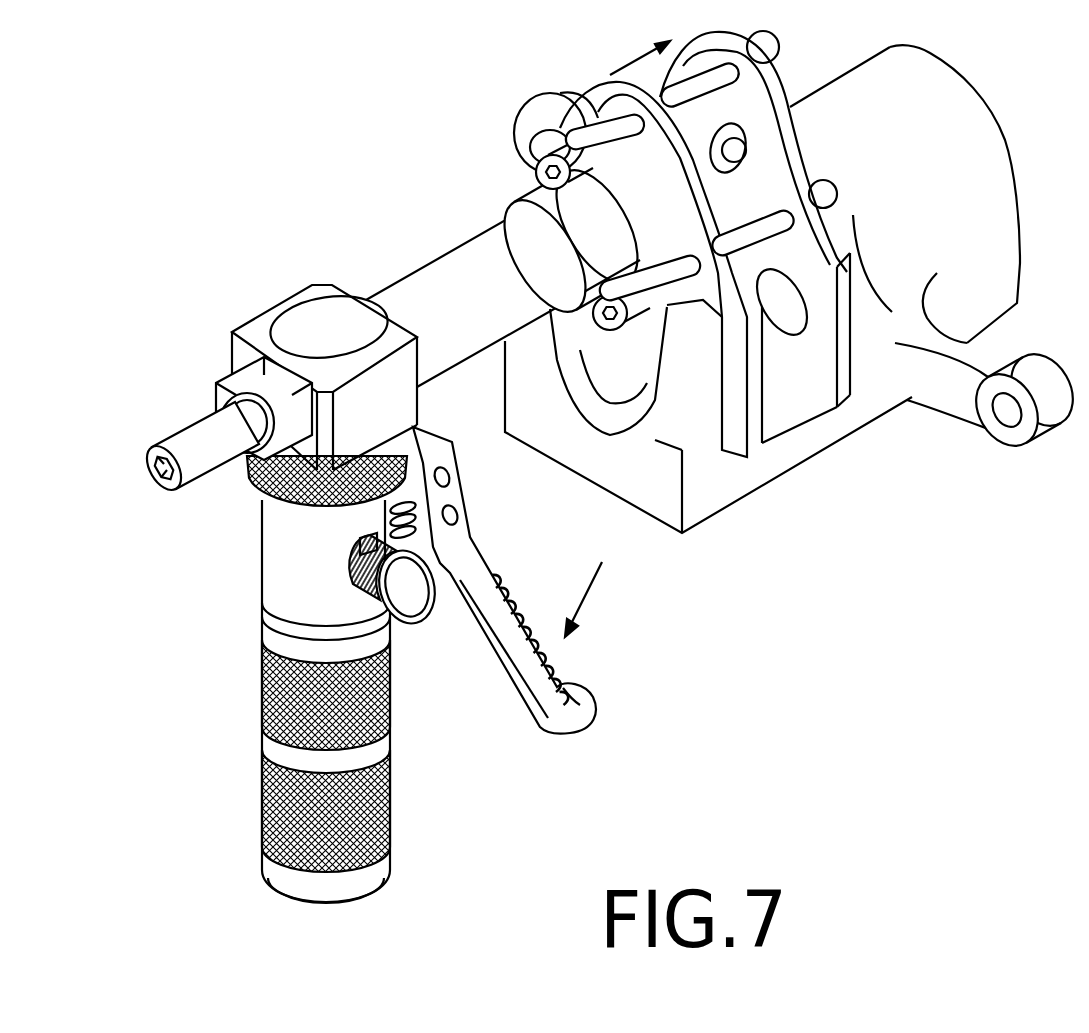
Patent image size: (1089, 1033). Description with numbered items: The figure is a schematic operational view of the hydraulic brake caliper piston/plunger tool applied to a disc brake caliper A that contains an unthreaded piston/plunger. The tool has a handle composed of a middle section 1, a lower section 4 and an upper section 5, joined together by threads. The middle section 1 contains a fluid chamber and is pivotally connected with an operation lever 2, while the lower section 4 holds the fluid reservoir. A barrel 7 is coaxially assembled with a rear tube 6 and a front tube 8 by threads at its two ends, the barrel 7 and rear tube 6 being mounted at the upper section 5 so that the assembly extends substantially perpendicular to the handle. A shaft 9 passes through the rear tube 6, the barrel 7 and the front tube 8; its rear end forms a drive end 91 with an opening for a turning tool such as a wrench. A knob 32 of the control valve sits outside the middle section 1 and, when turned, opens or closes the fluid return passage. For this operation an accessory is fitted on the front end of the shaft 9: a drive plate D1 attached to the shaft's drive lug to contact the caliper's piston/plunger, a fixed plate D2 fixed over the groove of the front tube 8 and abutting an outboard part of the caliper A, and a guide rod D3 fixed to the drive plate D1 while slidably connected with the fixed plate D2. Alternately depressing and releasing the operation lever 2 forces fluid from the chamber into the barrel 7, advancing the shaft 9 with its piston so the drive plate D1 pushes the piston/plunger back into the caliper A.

The middle section 1 is at (272, 557).
The operation lever 2 is at (553, 668).
The lower section 4 is at (260, 797).
The upper section 5 is at (252, 325).
The rear tube 6 is at (255, 368).
The barrel 7 is at (430, 273).
The front tube 8 is at (553, 217).
The shaft 9 is at (185, 419).
The drive end 91 is at (144, 427).
The knob 32 is at (412, 600).
The disc brake caliper A is at (837, 445).
The drive plate D1 is at (792, 368).
The fixed plate D2 is at (733, 443).
The guide rod D3 is at (617, 133).